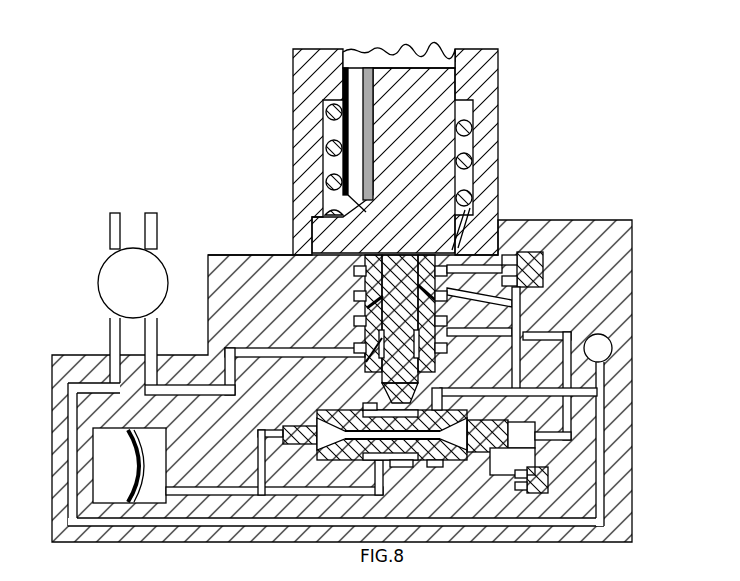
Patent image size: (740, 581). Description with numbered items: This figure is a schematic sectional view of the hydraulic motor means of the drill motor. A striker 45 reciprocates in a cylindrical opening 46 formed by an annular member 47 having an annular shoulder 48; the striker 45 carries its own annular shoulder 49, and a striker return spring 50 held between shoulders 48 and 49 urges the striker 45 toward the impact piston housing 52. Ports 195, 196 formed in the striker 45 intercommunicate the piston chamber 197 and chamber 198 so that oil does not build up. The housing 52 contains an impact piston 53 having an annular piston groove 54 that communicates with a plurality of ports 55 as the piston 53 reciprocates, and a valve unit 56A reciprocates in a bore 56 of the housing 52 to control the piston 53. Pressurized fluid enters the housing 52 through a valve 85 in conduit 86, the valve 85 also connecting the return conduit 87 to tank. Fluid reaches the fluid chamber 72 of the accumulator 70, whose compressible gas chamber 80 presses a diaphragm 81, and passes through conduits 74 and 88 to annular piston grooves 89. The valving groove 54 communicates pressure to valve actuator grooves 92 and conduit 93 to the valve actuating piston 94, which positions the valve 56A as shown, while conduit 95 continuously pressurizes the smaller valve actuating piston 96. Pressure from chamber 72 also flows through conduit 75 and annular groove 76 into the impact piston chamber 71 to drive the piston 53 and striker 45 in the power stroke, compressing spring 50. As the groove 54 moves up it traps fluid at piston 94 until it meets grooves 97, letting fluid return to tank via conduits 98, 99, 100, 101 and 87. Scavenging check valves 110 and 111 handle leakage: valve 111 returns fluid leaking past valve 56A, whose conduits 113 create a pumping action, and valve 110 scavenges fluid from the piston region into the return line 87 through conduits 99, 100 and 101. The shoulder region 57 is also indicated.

The striker 45 is at (383, 160).
The cylindrical opening 46 is at (450, 50).
The annular member 47 is at (490, 70).
The annular shoulder 48 is at (328, 212).
The annular shoulder 49 is at (330, 108).
The striker return spring 50 is at (472, 161).
The impact piston housing 52 is at (622, 436).
The impact piston 53 is at (407, 319).
The annular piston groove 54 is at (400, 375).
The ports 55 is at (384, 302).
The bore 56 is at (340, 410).
The valve unit 56A is at (492, 466).
The housing shoulder 57 is at (296, 258).
The accumulator 70 is at (95, 428).
The impact piston chamber 71 is at (428, 400).
The fluid chamber 72 is at (148, 466).
The conduit 74 is at (208, 486).
The conduit 75 is at (386, 490).
The annular piston groove 76 is at (415, 462).
The compressible gas chamber 80 is at (129, 465).
The diaphragm 81 is at (138, 490).
The valve 85 is at (133, 283).
The conduit 86 is at (155, 332).
The return conduit 87 is at (112, 332).
The conduit 88 is at (296, 348).
The annular piston grooves 89 is at (366, 404).
The valve actuator grooves 92 is at (356, 321).
The conduit 93 is at (492, 322).
The valve actuating piston 94 is at (515, 440).
The conduit 95 is at (266, 471).
The valve actuating piston 96 is at (292, 426).
The grooves 97 is at (356, 292).
The conduit 98 is at (460, 276).
The conduit 99 is at (548, 388).
The conduit 100 is at (602, 464).
The conduit 101 is at (605, 528).
The scavenging check valve 110 is at (530, 252).
The scavenging check valve 111 is at (550, 487).
The conduits 113 is at (355, 445).
The port 195 is at (368, 66).
The port 196 is at (470, 208).
The piston chamber 197 is at (412, 58).
The chamber 198 is at (472, 128).